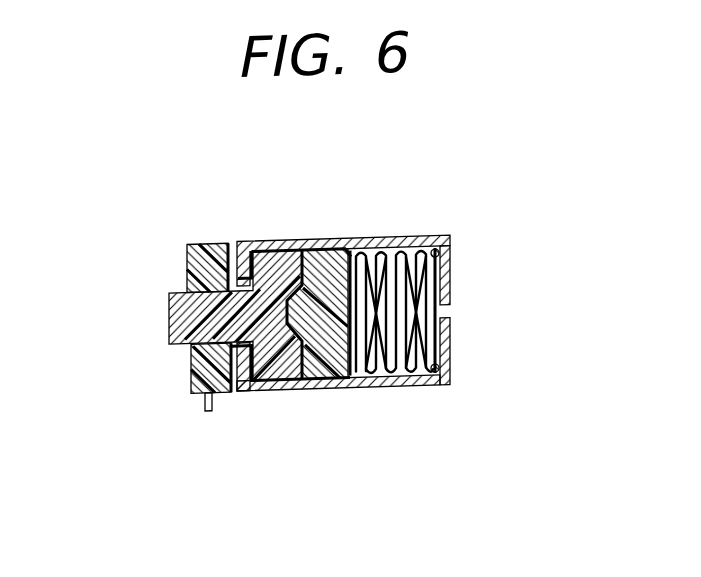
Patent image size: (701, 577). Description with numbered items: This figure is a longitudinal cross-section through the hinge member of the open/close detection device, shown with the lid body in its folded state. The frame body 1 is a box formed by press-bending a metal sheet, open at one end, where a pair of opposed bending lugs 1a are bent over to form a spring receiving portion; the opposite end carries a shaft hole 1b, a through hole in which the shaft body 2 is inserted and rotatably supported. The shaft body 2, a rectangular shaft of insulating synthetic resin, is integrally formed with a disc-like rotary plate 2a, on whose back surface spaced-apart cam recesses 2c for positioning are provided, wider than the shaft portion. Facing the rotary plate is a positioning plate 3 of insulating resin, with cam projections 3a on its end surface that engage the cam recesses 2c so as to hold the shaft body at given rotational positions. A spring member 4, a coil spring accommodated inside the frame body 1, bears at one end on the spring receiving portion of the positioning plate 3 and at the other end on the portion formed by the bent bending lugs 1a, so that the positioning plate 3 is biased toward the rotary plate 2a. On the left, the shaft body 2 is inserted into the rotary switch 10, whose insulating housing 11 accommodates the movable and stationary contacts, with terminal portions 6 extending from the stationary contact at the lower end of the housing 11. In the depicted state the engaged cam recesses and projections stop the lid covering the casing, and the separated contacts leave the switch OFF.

The frame body 1 is at (398, 391).
The bending lugs 1a is at (452, 289).
The shaft hole 1b is at (242, 350).
The shaft body 2 is at (178, 322).
The rotary plate 2a is at (268, 279).
The cam recesses 2c is at (300, 290).
The positioning plate 3 is at (326, 373).
The cam projections 3a is at (293, 314).
The spring member 4 is at (412, 263).
The terminal portions 6 is at (207, 402).
The rotary switch 10 is at (203, 243).
The housing 11 is at (193, 377).